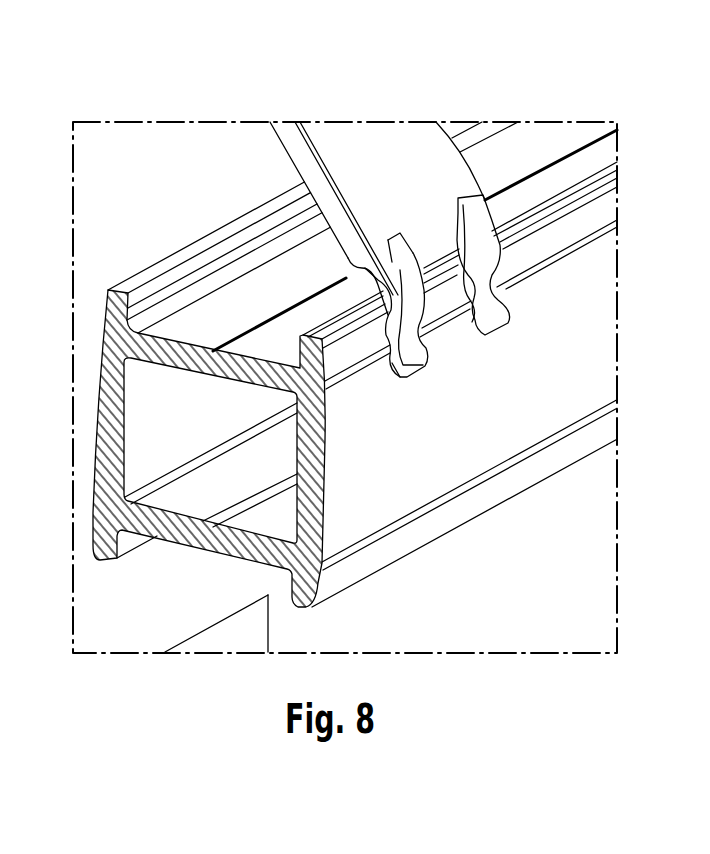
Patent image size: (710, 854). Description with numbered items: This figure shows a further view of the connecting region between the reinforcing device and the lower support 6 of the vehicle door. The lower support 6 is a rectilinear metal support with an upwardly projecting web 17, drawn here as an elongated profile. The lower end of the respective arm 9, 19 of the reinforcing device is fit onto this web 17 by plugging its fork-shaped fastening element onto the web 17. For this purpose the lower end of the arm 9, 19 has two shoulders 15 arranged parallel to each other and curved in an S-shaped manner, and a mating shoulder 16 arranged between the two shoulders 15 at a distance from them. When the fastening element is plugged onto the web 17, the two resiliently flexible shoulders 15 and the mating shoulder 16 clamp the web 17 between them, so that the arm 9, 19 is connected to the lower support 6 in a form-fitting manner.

The lower support 6 is at (212, 556).
The arm 9 is at (346, 133).
The arm 19 is at (360, 176).
The shoulders 15 is at (420, 368).
The mating shoulder 16 is at (434, 255).
The web 17 is at (538, 230).